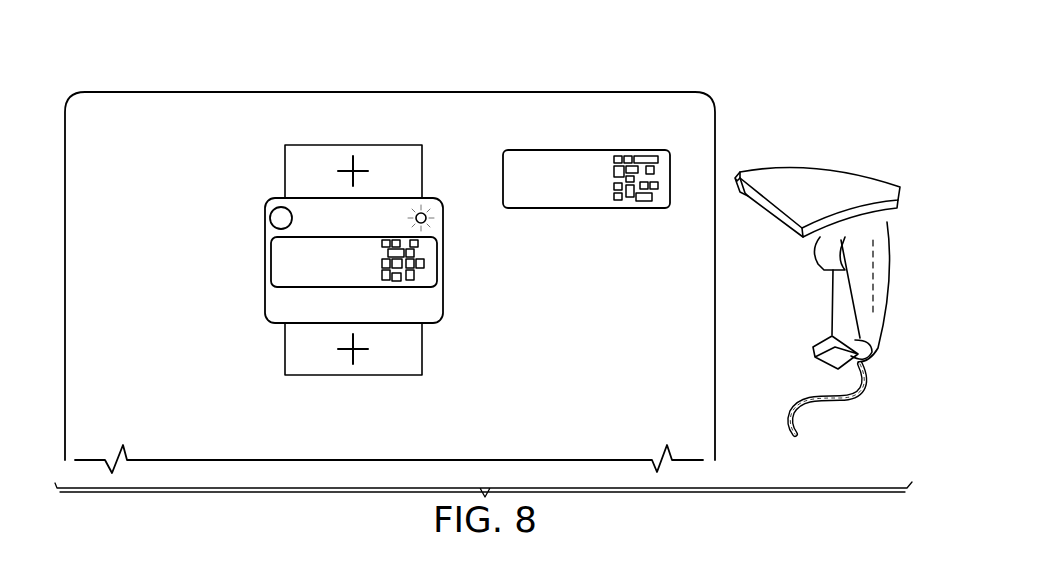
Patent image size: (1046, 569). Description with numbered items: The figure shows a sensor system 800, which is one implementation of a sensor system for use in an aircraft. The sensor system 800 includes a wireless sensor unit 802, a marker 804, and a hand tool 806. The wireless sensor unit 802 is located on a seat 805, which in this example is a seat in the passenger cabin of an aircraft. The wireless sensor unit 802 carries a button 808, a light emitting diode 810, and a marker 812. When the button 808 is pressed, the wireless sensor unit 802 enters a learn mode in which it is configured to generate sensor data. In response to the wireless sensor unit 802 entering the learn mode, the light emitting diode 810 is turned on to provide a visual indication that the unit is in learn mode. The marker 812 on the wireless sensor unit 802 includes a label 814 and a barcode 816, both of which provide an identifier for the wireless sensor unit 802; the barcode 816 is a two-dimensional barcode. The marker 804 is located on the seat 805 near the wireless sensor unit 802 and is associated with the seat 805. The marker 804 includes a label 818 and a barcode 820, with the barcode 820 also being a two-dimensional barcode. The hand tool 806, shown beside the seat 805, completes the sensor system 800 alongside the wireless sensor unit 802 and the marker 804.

The sensor system 800 is at (700, 72).
The seat 805 is at (222, 91).
The wireless sensor unit 802 is at (285, 172).
The marker 804 is at (575, 209).
The hand tool 806 is at (810, 175).
The button 808 is at (270, 220).
The light emitting diode 810 is at (428, 210).
The marker 812 is at (274, 291).
The label 814 is at (274, 261).
The barcode 816 is at (424, 265).
The label 818 is at (536, 170).
The barcode 820 is at (643, 206).